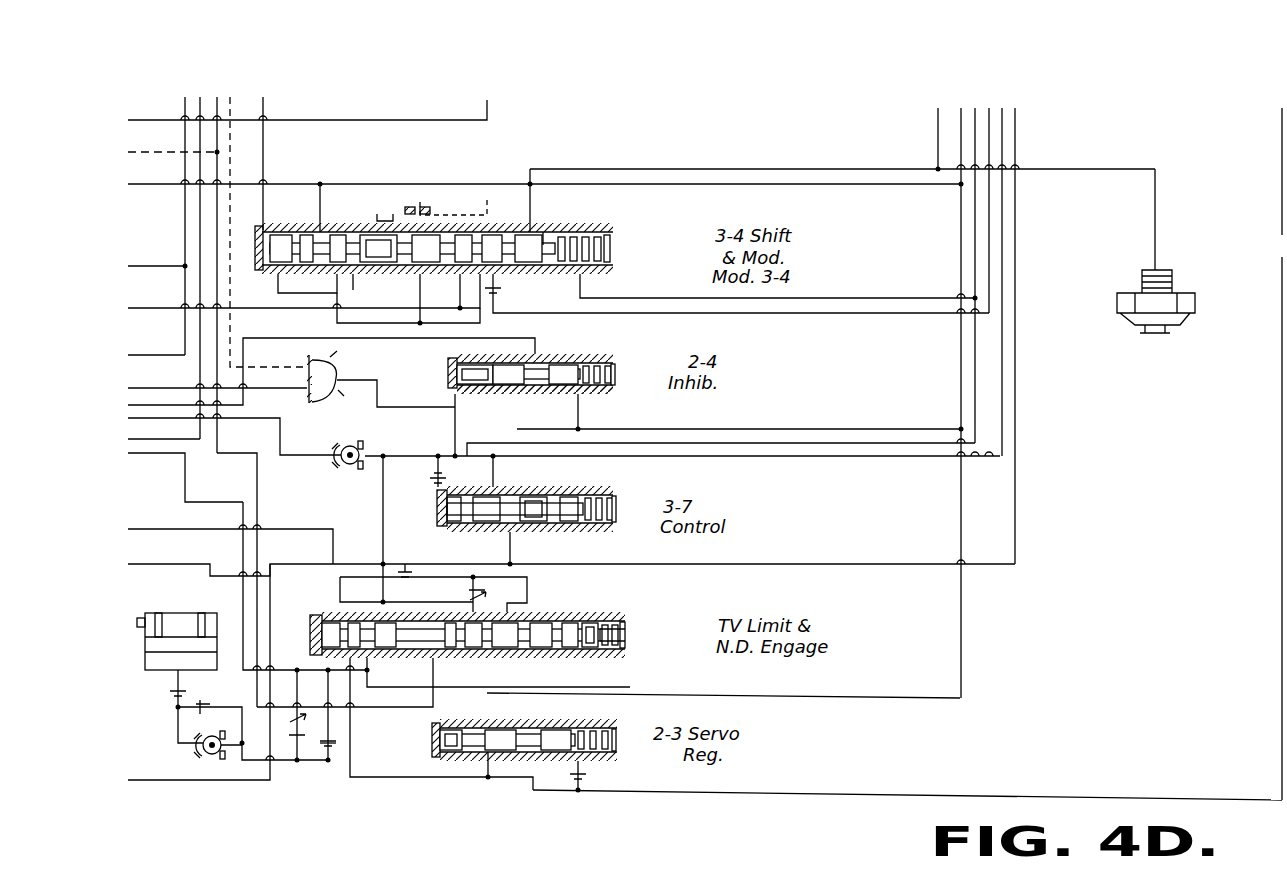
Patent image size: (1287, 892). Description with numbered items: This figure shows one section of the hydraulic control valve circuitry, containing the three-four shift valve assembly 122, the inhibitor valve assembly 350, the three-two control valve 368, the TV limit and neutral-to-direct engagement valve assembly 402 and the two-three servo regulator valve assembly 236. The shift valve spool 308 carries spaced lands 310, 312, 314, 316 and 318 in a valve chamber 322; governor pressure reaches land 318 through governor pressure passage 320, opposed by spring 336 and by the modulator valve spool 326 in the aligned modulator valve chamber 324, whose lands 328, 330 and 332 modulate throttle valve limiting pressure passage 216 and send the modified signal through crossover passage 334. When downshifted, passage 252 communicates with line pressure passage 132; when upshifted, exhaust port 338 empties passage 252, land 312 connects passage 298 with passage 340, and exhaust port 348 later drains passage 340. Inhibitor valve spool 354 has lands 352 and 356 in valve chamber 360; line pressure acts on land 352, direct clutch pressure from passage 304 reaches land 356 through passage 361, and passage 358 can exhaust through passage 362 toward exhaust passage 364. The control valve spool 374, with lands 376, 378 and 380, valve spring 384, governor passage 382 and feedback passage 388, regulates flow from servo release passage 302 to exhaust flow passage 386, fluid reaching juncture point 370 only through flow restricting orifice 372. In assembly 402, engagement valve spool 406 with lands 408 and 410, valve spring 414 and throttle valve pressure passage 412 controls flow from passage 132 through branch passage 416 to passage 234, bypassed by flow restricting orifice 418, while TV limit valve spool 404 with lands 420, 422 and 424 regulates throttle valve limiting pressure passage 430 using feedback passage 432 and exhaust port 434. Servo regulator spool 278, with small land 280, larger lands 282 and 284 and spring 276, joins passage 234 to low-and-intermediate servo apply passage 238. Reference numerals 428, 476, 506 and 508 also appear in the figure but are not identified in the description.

The 3-4 shift valve assembly 122 is at (426, 270).
The line pressure passage 132 is at (190, 508).
The throttle valve limiting pressure passage 216 is at (392, 122).
The passage 234 is at (398, 780).
The 2-3 servo regulator valve assembly 236 is at (619, 768).
The low-and-intermediate servo apply passage 238 is at (946, 797).
The passage 252 is at (672, 169).
The valve spring 276 is at (442, 762).
The valve spool 278 is at (522, 763).
The small valve land 280 is at (472, 694).
The valve land 282 is at (510, 762).
The valve land 284 is at (558, 762).
The passage 298 is at (258, 314).
The passage 302 is at (1015, 497).
The passage 304 is at (1004, 455).
The valve spool 308 is at (500, 232).
The valve land 310 is at (405, 268).
The valve land 312 is at (463, 233).
The valve land 314 is at (527, 200).
The valve land 316 is at (588, 232).
The valve land 318 is at (600, 250).
The governor pressure passage 320 is at (665, 294).
The valve chamber 322 is at (545, 232).
The modulator valve chamber 324 is at (300, 268).
The valve spool 326 is at (272, 268).
The valve land 328 is at (278, 232).
The second valve land 330 is at (304, 233).
The third valve land 332 is at (336, 233).
The crossover passage 334 is at (303, 304).
The spring 336 is at (356, 230).
The exhaust port 338 is at (548, 233).
The passage 340 is at (328, 238).
The exhaust port 348 is at (505, 292).
The inhibitor valve assembly 350 is at (575, 389).
The valve land 352 is at (578, 354).
The valve spool 354 is at (515, 388).
The companion land 356 is at (500, 360).
The passage 358 is at (350, 340).
The valve chamber 360 is at (540, 362).
The passage 361 is at (448, 400).
The passage 362 is at (372, 402).
The passage 364 is at (143, 457).
The 3-2 control valve 368 is at (570, 532).
The juncture point 370 is at (380, 554).
The flow restricting orifice 372 is at (406, 560).
The valve spool 374 is at (518, 523).
The valve land 376 is at (548, 495).
The valve land 378 is at (505, 495).
The valve land 380 is at (446, 525).
The governor passage 382 is at (686, 445).
The valve spring 384 is at (582, 495).
The exhaust flow passage 386 is at (392, 454).
The feedback passage 388 is at (432, 480).
The TV limit and neutral-to-direct engagement valve assembly 402 is at (606, 622).
The TV limit valve spool 404 is at (562, 622).
The neutral-to-direct engagement valve spool 406 is at (338, 624).
The valve land 408 is at (382, 650).
The valve land 410 is at (398, 622).
The throttle valve pressure passage 412 is at (296, 530).
The valve spring 414 is at (426, 660).
The branch passage 416 is at (338, 744).
The flow restricting orifice 418 is at (330, 762).
The valve land 420 is at (468, 650).
The valve land 422 is at (512, 650).
The valve land 424 is at (626, 645).
The spring seat 428 is at (628, 632).
The throttle valve limiting pressure passage 430 is at (203, 572).
The feedback passage 432 is at (482, 600).
The exhaust port 434 is at (548, 652).
The passage 476 is at (147, 352).
The passage 506 is at (178, 388).
The passage 508 is at (138, 188).